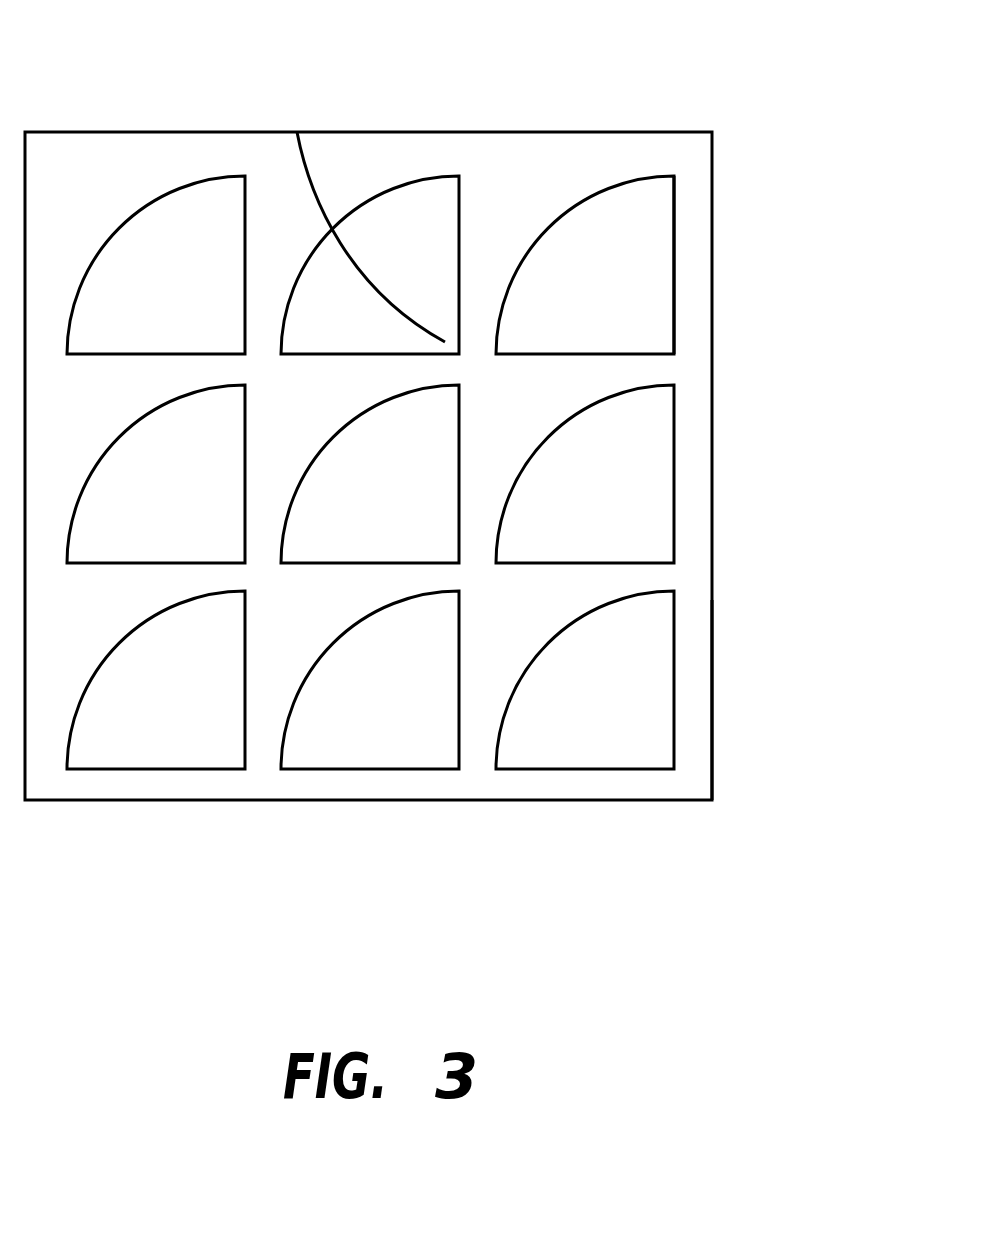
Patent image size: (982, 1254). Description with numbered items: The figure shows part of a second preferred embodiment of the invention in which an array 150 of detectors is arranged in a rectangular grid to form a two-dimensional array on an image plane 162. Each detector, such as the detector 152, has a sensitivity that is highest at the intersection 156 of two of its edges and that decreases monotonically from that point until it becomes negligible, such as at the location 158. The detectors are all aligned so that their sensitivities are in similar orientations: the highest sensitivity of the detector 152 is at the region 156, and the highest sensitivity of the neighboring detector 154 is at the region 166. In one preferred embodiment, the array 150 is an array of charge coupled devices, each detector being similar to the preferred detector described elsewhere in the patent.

The array 150 is at (773, 452).
The detector 152 is at (577, 238).
The detector 154 is at (367, 230).
The intersection of two edges 156 is at (655, 333).
The location of negligible sensitivity 158 is at (523, 177).
The image plane 162 is at (713, 673).
The region of highest sensitivity 166 is at (297, 132).